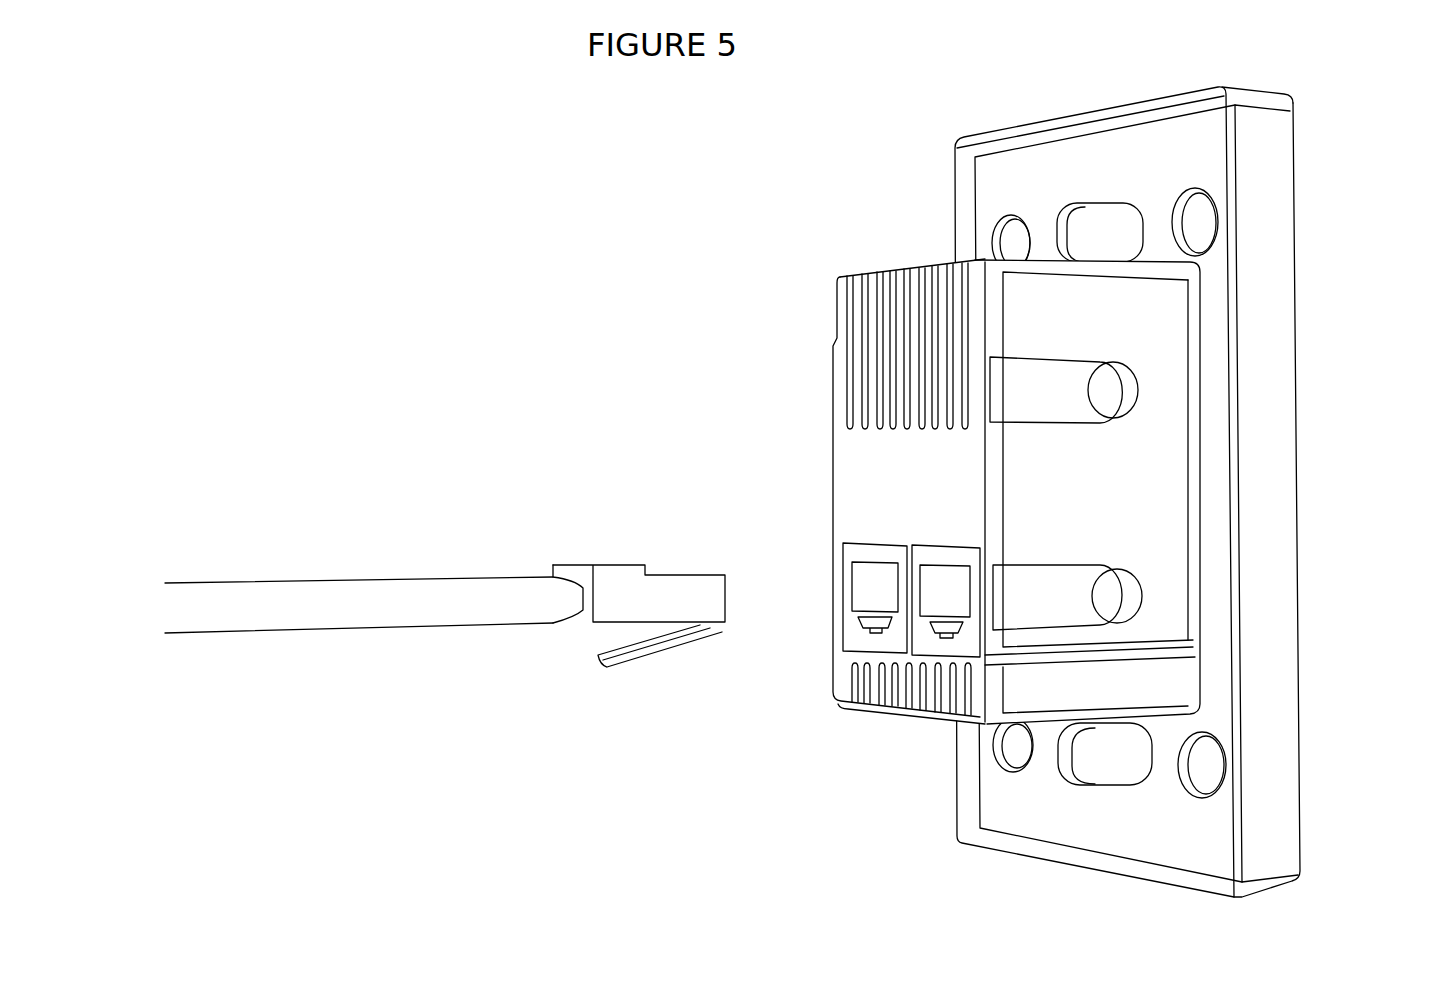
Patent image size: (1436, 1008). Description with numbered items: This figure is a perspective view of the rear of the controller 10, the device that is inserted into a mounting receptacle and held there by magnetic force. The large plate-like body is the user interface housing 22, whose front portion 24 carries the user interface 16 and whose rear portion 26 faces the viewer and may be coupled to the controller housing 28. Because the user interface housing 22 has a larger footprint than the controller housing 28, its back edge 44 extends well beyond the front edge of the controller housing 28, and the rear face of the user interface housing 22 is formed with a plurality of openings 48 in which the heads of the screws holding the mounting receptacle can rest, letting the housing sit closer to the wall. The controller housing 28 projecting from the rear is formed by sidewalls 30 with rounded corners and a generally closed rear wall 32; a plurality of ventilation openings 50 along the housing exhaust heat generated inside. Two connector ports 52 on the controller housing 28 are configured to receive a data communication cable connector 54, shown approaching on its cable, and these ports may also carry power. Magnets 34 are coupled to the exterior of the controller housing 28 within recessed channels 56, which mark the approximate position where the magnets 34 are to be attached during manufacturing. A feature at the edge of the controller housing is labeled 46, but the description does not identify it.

The controller 10 is at (1313, 280).
The user interface 16 is at (1305, 503).
The user interface housing 22 is at (1267, 500).
The front portion 24 is at (1290, 95).
The rear portion 26 is at (1222, 85).
The controller housing 28 is at (1098, 459).
The sidewalls 30 is at (938, 256).
The rear wall 32 is at (855, 473).
The magnets 34 is at (1115, 492).
The back edge 44 is at (1020, 120).
The rim of cover 46 is at (1200, 433).
The openings 48 is at (1109, 493).
The ventilation openings 50 is at (885, 268).
The connector ports 52 is at (911, 600).
The data communication cable connector 54 is at (639, 616).
The recessed channels 56 is at (1056, 493).